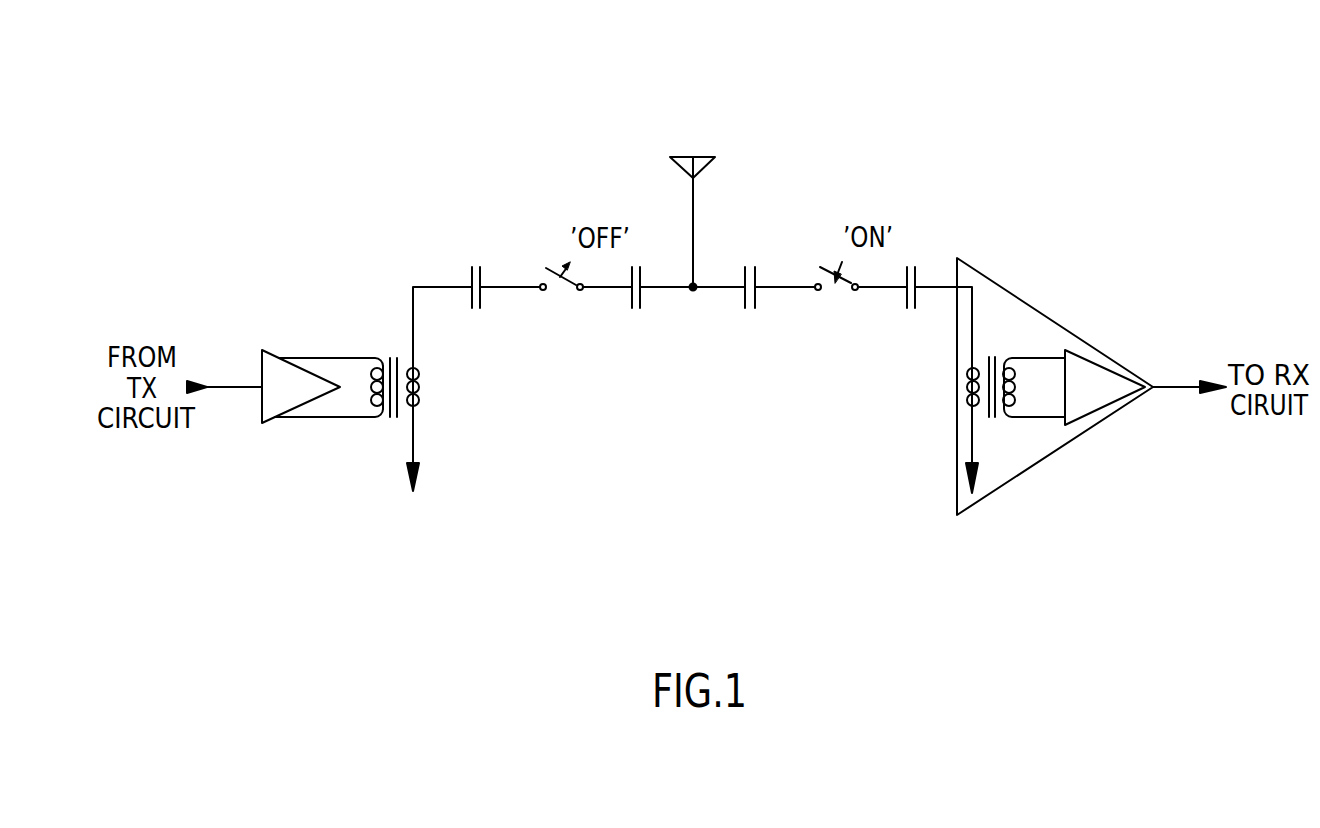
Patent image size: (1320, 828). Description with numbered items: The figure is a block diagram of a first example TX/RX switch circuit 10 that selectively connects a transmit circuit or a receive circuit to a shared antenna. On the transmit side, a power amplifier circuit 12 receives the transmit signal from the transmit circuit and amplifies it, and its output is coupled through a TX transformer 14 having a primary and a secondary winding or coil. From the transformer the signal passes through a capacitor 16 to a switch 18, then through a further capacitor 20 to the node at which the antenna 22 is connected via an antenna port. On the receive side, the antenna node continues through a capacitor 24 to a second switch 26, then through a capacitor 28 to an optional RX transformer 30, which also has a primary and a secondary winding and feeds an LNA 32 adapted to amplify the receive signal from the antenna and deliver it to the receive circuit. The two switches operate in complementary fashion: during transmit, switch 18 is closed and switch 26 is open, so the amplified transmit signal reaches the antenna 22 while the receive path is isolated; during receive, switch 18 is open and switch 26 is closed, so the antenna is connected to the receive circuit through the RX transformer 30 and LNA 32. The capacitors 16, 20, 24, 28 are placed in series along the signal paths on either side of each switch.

The TX/RX switch circuit 10 is at (1120, 73).
The power amplifier circuit 12 is at (303, 410).
The TX transformer 14 is at (395, 357).
The capacitor 16 is at (482, 298).
The switch 18 is at (573, 292).
The capacitor 20 is at (642, 298).
The antenna 22 is at (705, 168).
The capacitor 24 is at (755, 298).
The switch 26 is at (840, 290).
The capacitor 28 is at (918, 298).
The RX transformer 30 is at (990, 417).
The LNA 32 is at (1088, 355).